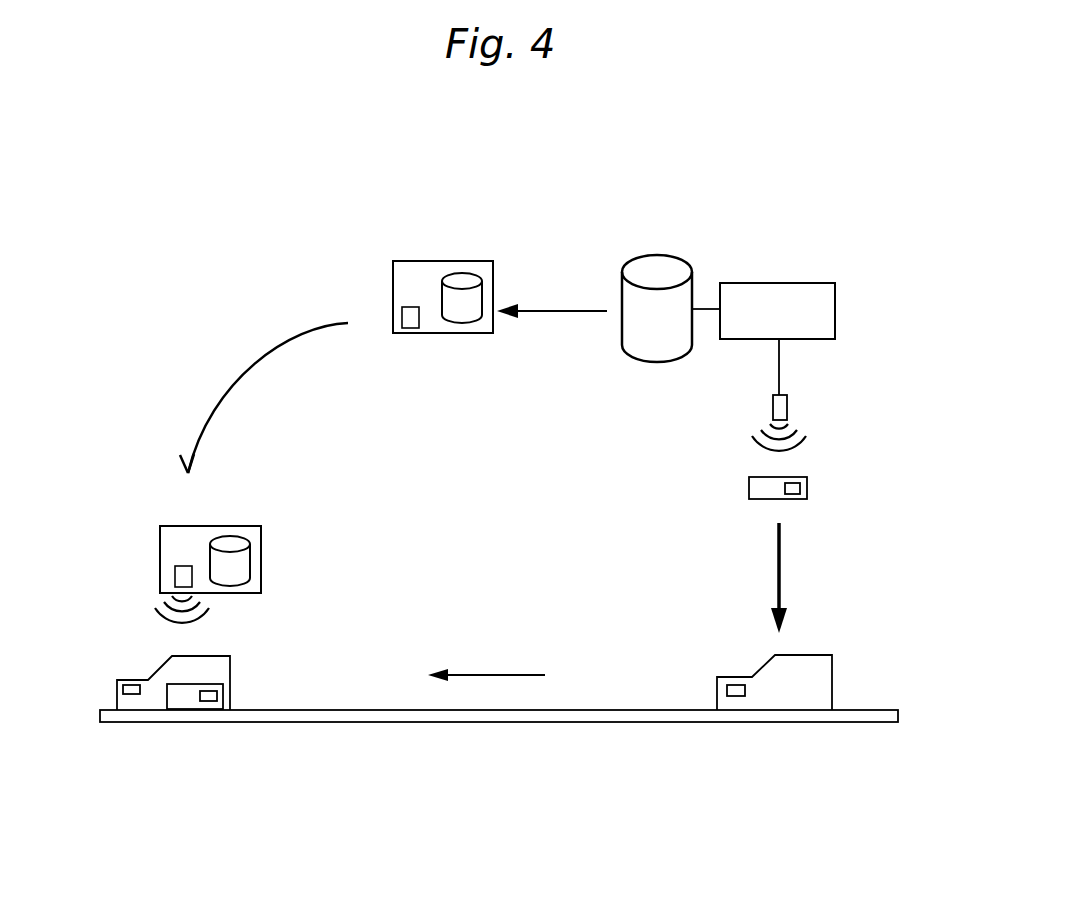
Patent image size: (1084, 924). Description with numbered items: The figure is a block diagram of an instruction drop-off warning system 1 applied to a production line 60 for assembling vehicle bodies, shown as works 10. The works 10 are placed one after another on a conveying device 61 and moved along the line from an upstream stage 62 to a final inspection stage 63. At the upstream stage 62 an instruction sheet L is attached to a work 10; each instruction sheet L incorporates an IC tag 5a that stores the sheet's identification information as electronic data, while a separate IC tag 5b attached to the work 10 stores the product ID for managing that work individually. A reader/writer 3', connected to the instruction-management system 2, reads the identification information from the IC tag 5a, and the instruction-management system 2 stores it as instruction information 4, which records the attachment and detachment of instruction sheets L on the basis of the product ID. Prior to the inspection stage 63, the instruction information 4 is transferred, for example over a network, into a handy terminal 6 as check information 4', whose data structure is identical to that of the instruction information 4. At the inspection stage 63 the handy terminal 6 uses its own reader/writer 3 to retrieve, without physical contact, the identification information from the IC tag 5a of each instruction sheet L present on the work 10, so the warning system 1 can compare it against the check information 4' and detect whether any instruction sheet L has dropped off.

The instruction drop-off warning system 1 is at (127, 255).
The instruction-management system 2 is at (827, 306).
The reader/writer 3 is at (164, 592).
The reader/writer 3' is at (799, 421).
The instruction information 4 is at (657, 280).
The check information 4' is at (368, 414).
The IC tag 5a is at (791, 488).
The IC tag 5b is at (735, 688).
The handy terminal 6 is at (417, 268).
The work 10 is at (832, 660).
The instruction sheet L is at (765, 499).
The production line 60 is at (855, 827).
The conveying device 61 is at (500, 722).
The upstream stage 62 is at (825, 734).
The inspection stage 63 is at (222, 768).